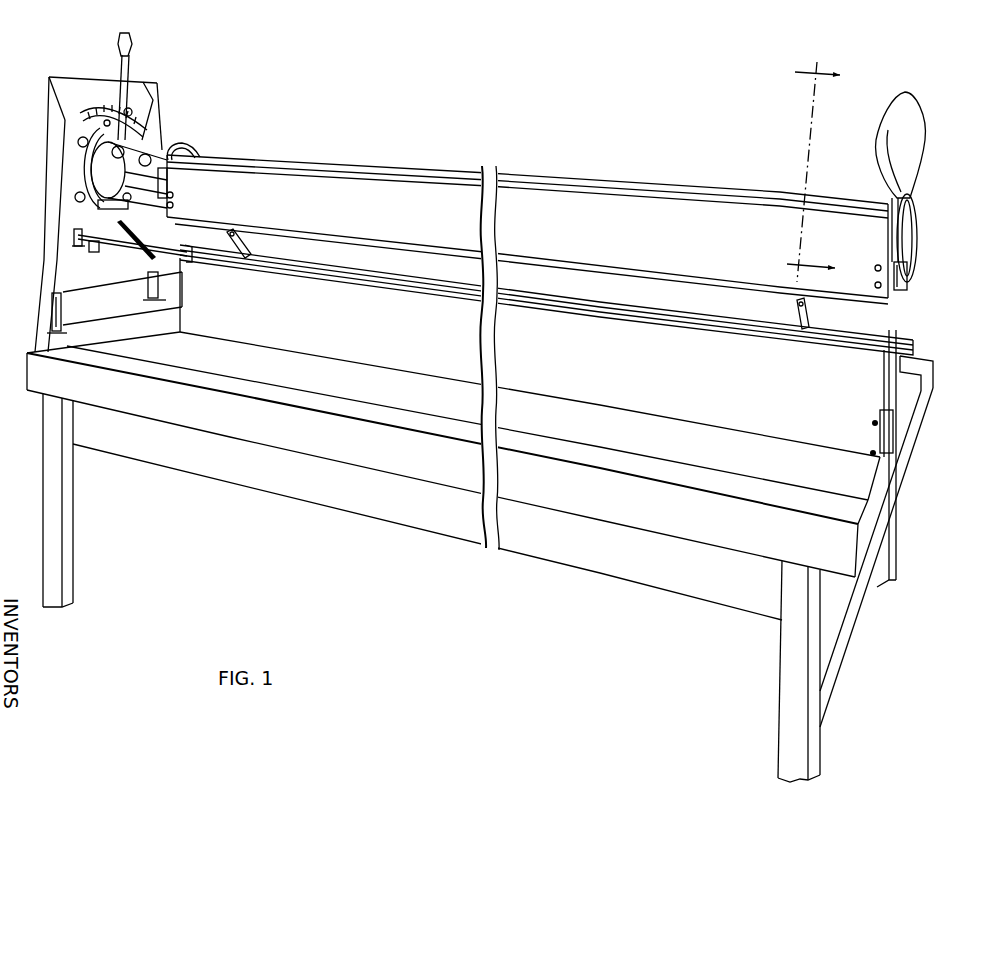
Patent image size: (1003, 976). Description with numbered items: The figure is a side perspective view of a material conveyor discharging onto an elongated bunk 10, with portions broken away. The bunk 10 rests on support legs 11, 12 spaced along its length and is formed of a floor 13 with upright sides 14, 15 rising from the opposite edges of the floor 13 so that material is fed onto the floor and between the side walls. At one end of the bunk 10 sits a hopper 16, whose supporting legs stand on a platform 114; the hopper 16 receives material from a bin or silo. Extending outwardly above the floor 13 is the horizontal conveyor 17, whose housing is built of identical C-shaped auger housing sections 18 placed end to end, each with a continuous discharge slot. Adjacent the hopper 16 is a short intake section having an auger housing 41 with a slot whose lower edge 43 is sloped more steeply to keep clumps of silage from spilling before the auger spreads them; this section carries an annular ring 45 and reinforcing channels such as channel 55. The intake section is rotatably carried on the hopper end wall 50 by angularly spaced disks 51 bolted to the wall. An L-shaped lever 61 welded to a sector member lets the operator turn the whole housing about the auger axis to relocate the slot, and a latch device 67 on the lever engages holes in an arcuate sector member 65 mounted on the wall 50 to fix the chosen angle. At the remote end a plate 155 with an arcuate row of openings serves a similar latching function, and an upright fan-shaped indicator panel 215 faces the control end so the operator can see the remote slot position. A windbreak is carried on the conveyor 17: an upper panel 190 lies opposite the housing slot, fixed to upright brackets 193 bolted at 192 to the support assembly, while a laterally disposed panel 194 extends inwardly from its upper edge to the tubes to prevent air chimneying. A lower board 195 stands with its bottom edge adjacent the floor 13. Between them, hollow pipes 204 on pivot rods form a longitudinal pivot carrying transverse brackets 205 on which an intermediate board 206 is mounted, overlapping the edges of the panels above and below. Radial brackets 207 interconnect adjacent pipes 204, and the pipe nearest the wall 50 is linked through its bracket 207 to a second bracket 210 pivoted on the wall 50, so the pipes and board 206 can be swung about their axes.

The bunk 10 is at (937, 383).
The support leg 11 is at (897, 543).
The support leg 12 is at (55, 558).
The floor 13 is at (873, 477).
The upright side 14 is at (930, 374).
The upright side 15 is at (863, 530).
The hopper 16 is at (143, 98).
The horizontal conveyor 17 is at (825, 190).
The auger housing section 18 is at (507, 170).
The auger housing 41 is at (125, 170).
The lower edge 43 is at (153, 167).
The annular ring 45 is at (187, 148).
The end wall 50 is at (116, 229).
The disk 51 is at (78, 194).
The reinforcing channel 55 is at (93, 207).
The L-shaped lever 61 is at (132, 62).
The arcuate sector member 65 is at (95, 108).
The latch device 67 is at (127, 108).
The platform 114 is at (122, 330).
The plate 155 is at (910, 288).
The upper panel 190 is at (253, 177).
The bolts 192 is at (174, 195).
The upright bracket 193 is at (915, 250).
The laterally disposed panel 194 is at (392, 168).
The lower board 195 is at (836, 391).
The hollow pipe 204 is at (108, 242).
The transverse bracket 205 is at (248, 233).
The intermediate board 206 is at (298, 250).
The radial bracket 207 is at (95, 252).
The second bracket 210 is at (78, 233).
The indicator panel 215 is at (907, 122).